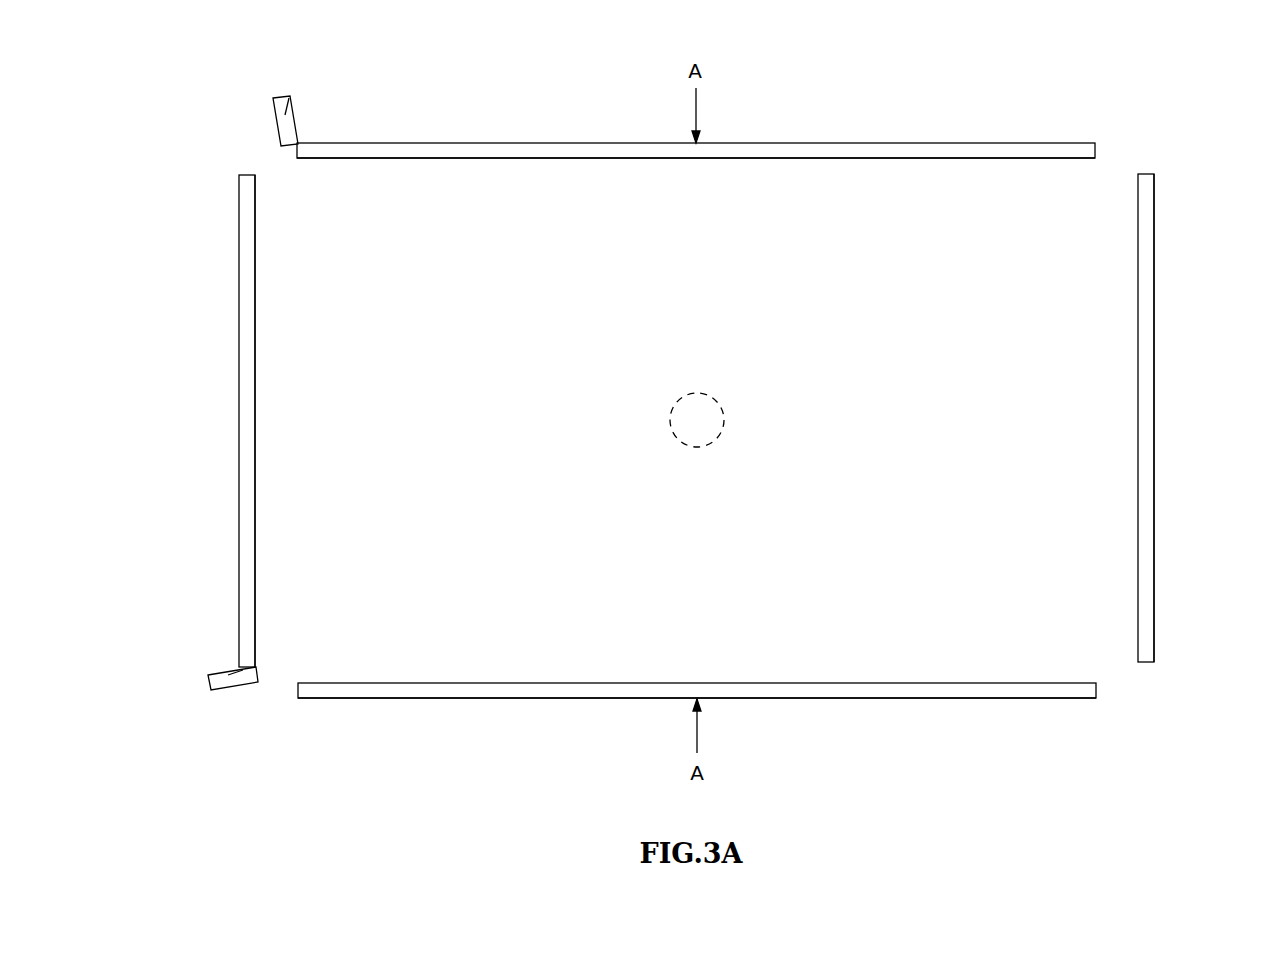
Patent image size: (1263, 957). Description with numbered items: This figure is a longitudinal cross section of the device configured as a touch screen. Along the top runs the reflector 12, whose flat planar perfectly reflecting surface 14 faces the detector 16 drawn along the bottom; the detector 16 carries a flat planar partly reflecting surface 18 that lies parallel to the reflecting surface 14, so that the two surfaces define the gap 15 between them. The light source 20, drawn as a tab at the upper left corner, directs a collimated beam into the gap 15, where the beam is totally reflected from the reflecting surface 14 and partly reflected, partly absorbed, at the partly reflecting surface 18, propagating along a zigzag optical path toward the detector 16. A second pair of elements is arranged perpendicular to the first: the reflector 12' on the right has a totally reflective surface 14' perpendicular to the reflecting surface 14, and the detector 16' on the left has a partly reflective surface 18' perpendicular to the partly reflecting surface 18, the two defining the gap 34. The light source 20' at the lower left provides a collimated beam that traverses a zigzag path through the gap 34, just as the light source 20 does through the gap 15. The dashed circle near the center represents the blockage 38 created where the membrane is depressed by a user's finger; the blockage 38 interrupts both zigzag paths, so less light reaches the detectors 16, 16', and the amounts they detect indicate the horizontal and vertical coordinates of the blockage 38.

The reflector 12 is at (697, 737).
The reflector 12' is at (1195, 418).
The reflecting surface 14 is at (697, 641).
The totally reflective surface 14' is at (1100, 418).
The gap 15 is at (480, 315).
The detector 16 is at (696, 104).
The detector 16' is at (206, 421).
The partly reflecting surface 18 is at (696, 199).
The partly reflective surface 18' is at (292, 421).
The light source 20 is at (307, 84).
The light source 20' is at (197, 682).
The gap 34 is at (513, 315).
The blockage 38 is at (713, 400).